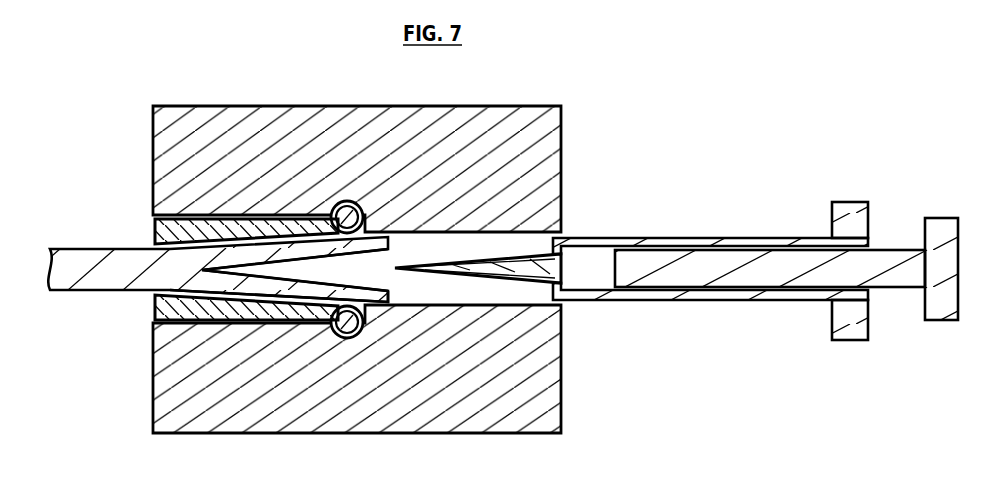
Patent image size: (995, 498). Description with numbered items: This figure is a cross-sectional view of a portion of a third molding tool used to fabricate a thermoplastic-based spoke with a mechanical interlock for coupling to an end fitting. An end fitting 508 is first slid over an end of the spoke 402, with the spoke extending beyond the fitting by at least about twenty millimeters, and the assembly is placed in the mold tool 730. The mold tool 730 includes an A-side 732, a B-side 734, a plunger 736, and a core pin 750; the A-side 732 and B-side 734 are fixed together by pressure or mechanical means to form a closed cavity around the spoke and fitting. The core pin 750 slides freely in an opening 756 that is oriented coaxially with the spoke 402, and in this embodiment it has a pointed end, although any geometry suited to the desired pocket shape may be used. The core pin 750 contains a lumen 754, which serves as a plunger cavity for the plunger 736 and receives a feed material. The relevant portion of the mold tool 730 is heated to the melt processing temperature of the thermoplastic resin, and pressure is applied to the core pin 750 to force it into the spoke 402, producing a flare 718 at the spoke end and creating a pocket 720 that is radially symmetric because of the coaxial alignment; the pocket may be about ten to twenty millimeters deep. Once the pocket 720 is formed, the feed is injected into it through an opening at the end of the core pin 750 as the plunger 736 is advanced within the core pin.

The mold tool 730 is at (610, 120).
The A-side 732 is at (236, 106).
The B-side 734 is at (562, 410).
The end fitting 508 is at (153, 232).
The spoke 402 is at (123, 248).
The pocket 720 is at (320, 280).
The flare 718 is at (386, 305).
The opening 756 is at (520, 243).
The core pin 750 is at (620, 238).
The lumen 754 is at (585, 272).
The plunger 736 is at (936, 218).